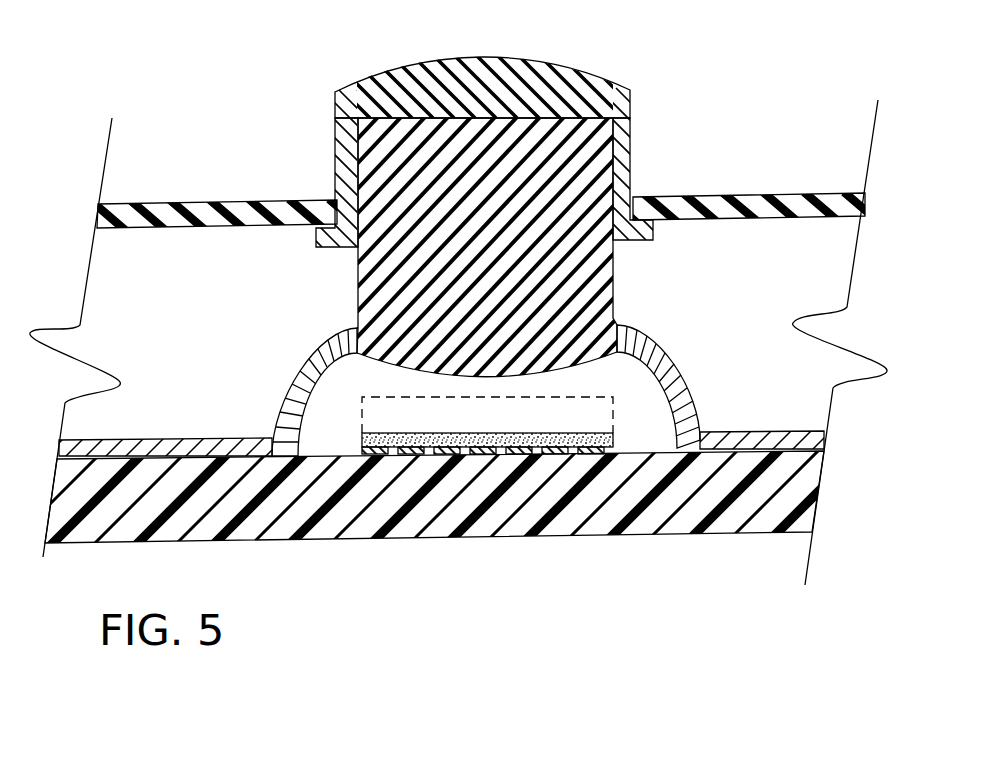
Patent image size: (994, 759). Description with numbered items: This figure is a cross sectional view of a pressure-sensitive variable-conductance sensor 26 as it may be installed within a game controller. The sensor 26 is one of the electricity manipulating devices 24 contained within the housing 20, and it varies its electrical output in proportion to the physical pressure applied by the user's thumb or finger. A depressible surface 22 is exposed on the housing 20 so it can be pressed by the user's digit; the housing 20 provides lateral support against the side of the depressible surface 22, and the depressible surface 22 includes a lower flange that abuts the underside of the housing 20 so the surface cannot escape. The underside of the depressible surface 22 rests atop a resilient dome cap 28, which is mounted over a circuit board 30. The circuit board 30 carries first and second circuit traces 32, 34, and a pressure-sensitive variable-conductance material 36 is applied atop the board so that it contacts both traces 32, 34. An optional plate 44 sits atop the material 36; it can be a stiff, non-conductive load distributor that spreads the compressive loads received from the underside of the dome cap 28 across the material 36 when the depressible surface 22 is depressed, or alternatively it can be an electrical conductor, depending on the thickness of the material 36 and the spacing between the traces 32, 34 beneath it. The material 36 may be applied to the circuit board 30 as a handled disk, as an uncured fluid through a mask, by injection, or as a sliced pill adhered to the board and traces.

The housing 20 is at (245, 203).
The depressible surface 22 is at (593, 72).
The electricity manipulating device 24 is at (317, 145).
The pressure-sensitive variable-conductance sensor 26 is at (512, 540).
The resilient dome cap 28 is at (613, 277).
The circuit board 30 is at (755, 533).
The first circuit trace 32 is at (383, 455).
The second circuit trace 34 is at (425, 455).
The pressure-sensitive variable-conductance material 36 is at (373, 437).
The plate 44 is at (608, 406).